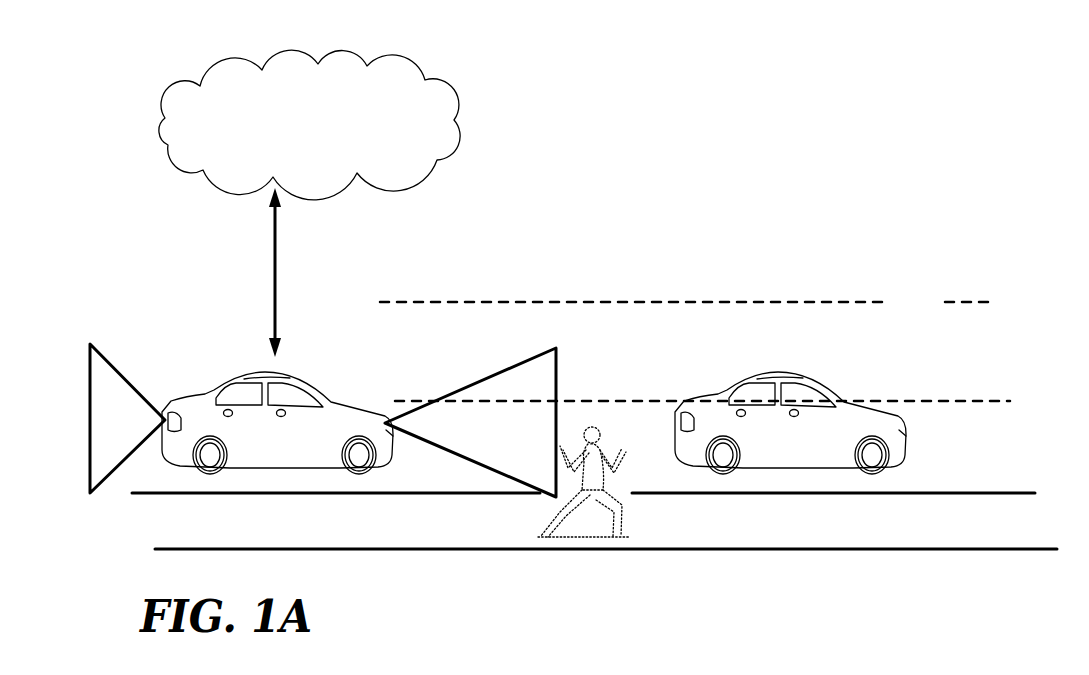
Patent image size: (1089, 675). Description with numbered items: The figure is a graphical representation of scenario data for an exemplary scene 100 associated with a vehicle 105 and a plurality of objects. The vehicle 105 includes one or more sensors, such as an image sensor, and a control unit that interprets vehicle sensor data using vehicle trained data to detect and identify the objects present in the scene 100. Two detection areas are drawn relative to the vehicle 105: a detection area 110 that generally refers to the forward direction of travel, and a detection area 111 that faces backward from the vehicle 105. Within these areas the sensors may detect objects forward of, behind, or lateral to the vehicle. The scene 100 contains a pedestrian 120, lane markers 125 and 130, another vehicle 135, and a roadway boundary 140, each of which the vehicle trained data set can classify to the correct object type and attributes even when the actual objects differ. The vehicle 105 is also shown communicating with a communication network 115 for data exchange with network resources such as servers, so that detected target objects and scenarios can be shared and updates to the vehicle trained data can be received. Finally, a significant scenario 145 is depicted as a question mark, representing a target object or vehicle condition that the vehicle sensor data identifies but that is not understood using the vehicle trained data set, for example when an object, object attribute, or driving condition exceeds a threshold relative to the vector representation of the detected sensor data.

The scene 100 is at (207, 262).
The vehicle 105 is at (237, 381).
The detection area 110 is at (443, 392).
The detection area 111 is at (88, 345).
The communication network 115 is at (417, 64).
The pedestrian 120 is at (535, 527).
The lane marker 125 is at (575, 400).
The lane marker 130 is at (595, 307).
The vehicle 135 is at (752, 378).
The roadway boundary 140 is at (1000, 493).
The significant scenario 145 is at (925, 262).